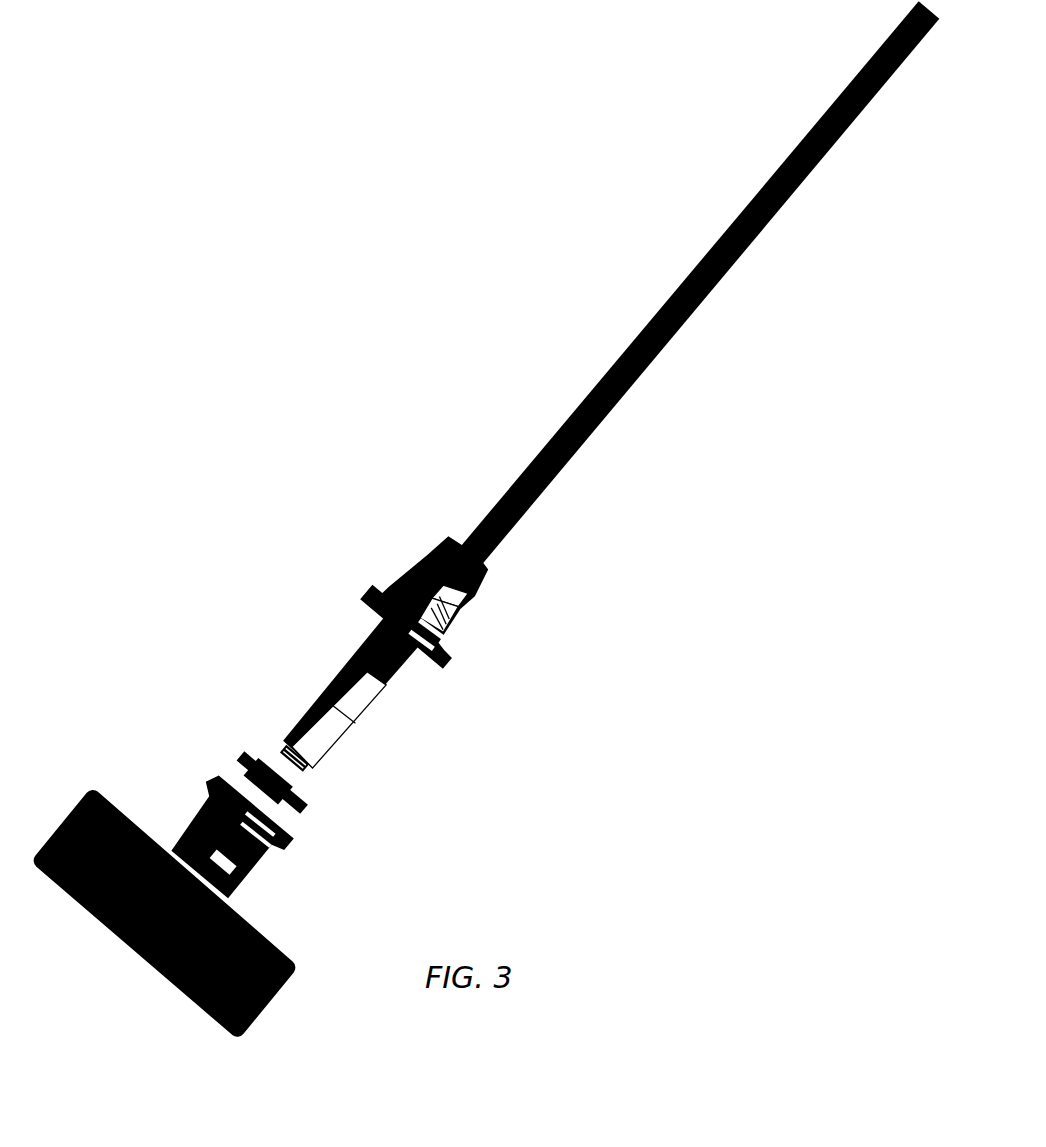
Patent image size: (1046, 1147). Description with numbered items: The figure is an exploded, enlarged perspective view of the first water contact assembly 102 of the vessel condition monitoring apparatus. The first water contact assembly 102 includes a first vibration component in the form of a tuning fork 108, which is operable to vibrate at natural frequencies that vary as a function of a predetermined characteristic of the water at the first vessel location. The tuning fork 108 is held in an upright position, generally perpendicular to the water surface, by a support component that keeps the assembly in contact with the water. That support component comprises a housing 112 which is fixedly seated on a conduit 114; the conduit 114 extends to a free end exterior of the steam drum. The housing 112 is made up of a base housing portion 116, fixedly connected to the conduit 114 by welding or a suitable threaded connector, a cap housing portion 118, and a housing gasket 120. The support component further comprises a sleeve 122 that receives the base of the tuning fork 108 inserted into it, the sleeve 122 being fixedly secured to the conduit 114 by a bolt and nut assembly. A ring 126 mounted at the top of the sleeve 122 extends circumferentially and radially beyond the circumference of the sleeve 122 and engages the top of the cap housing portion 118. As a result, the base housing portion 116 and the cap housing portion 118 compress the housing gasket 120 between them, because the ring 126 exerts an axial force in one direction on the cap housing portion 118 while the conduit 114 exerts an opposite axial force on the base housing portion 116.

The first water contact assembly 102 is at (389, 764).
The tuning fork 108 is at (683, 325).
The housing 112 is at (395, 567).
The conduit 114 is at (188, 1000).
The base housing portion 116 is at (250, 866).
The cap housing portion 118 is at (447, 632).
The housing gasket 120 is at (305, 798).
The sleeve 122 is at (311, 713).
The ring 126 is at (493, 590).